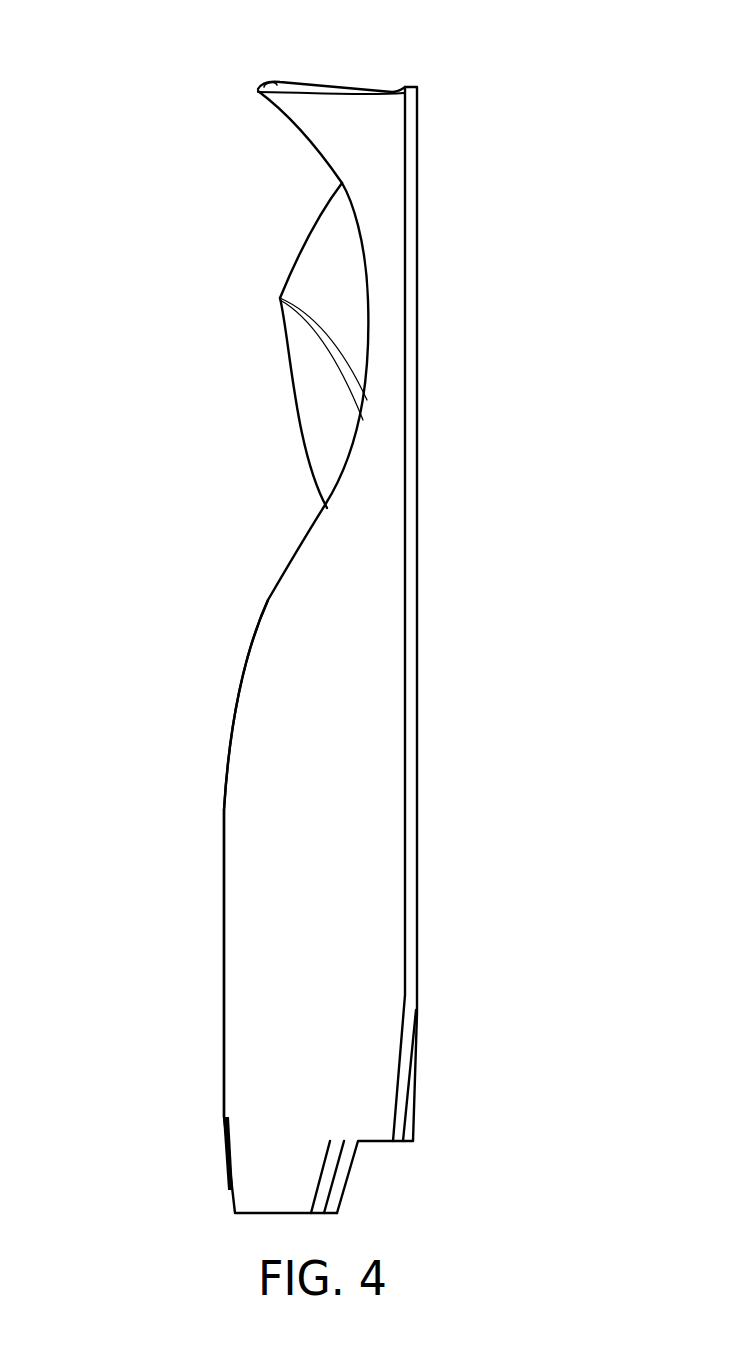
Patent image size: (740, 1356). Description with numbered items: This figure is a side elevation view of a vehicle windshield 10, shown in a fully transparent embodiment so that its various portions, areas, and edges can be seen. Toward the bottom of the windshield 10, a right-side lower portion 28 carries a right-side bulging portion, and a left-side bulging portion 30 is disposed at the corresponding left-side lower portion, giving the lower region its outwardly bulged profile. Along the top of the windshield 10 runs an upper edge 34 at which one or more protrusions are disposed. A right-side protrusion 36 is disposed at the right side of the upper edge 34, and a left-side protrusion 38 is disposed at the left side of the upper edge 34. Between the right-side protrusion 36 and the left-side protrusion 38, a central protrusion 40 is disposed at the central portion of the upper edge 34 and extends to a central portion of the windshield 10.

The windshield 10 is at (460, 317).
The right-side lower portion 28 is at (225, 838).
The left-side bulging portion 30 is at (224, 1012).
The upper edge 34 is at (342, 85).
The right-side protrusion 36 is at (258, 92).
The left-side protrusion 38 is at (258, 87).
The central protrusion 40 is at (285, 312).